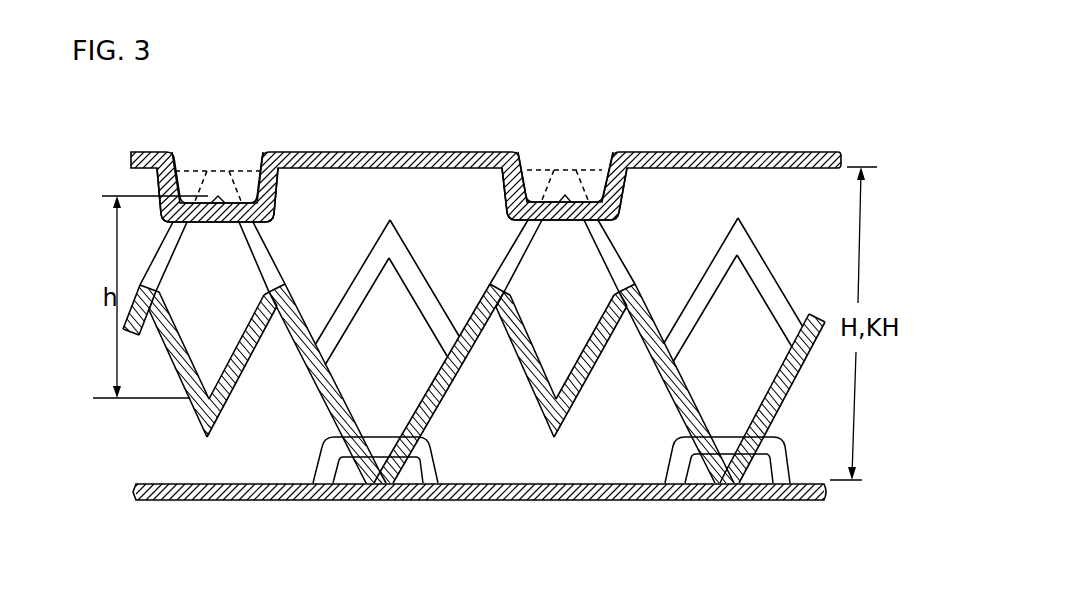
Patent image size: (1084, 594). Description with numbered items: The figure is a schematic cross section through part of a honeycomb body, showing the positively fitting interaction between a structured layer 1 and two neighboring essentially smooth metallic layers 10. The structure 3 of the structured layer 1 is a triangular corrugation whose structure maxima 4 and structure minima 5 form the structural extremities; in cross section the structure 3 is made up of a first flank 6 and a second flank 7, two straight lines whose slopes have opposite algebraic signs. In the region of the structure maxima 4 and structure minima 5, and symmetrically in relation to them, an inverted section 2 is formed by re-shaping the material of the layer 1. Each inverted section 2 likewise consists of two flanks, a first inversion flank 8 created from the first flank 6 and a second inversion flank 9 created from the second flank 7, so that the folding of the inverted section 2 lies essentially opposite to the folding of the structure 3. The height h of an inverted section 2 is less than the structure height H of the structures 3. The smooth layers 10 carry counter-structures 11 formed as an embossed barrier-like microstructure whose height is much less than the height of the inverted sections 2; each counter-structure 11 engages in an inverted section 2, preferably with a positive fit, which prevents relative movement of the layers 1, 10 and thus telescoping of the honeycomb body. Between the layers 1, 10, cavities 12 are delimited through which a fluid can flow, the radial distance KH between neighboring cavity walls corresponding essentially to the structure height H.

The structured layer 1 is at (474, 393).
The inverted section 2 is at (778, 285).
The structure 3 is at (322, 382).
The structure maxima 4 is at (212, 180).
The structure minima 5 is at (385, 485).
The first flank 6 is at (517, 252).
The second flank 7 is at (610, 253).
The first inversion flank 8 is at (500, 353).
The second inversion flank 9 is at (593, 373).
The essentially smooth metallic layer 10 is at (486, 318).
The counter-structure 11 is at (257, 208).
The cavity 12 is at (373, 190).